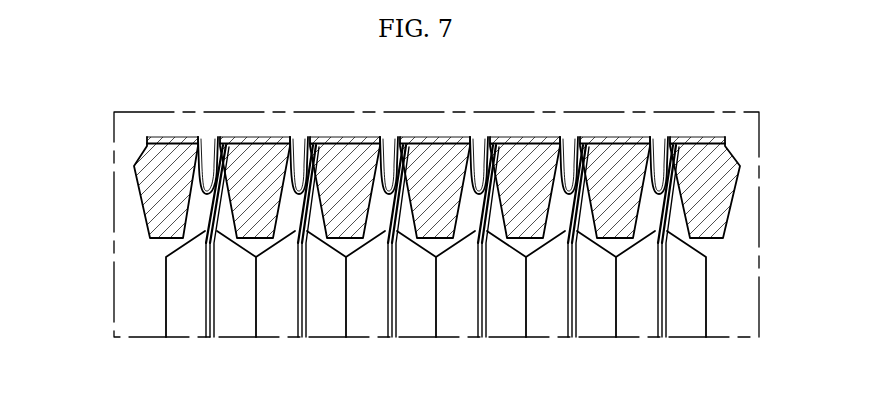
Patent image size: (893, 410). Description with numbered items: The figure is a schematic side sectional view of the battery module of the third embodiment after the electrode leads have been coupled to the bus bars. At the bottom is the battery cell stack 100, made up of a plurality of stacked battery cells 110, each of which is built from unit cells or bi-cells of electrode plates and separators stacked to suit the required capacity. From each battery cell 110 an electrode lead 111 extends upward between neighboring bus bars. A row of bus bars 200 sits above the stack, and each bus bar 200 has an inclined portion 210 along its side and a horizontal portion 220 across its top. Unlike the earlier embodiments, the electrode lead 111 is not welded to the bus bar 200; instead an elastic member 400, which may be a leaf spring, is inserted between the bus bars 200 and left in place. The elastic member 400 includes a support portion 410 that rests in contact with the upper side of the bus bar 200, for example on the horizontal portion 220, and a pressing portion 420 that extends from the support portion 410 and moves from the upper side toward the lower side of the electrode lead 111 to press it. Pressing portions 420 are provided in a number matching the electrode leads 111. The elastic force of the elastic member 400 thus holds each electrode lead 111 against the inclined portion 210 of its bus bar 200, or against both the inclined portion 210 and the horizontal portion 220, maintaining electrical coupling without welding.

The battery cell stack 100 is at (436, 239).
The battery cell 110 is at (230, 323).
The electrode lead 111 is at (229, 156).
The bus bar 200 is at (400, 185).
The inclined portion 210 is at (140, 151).
The horizontal portion 220 is at (146, 139).
The elastic member 400 is at (423, 135).
The support portion 410 is at (160, 143).
The pressing portion 420 is at (208, 188).